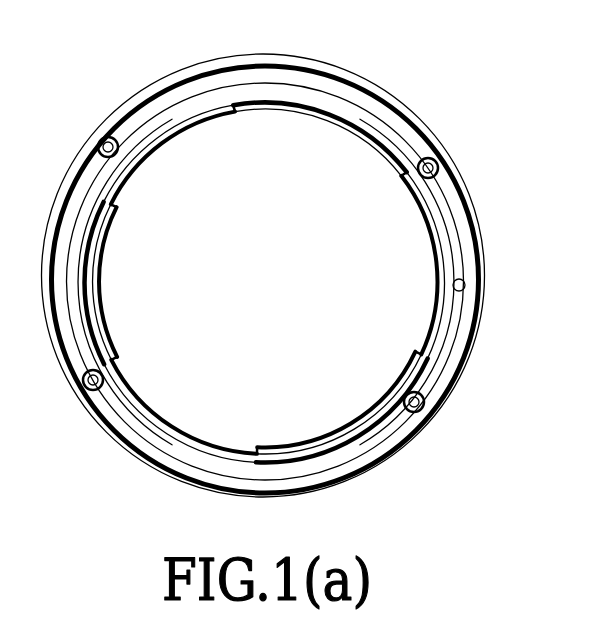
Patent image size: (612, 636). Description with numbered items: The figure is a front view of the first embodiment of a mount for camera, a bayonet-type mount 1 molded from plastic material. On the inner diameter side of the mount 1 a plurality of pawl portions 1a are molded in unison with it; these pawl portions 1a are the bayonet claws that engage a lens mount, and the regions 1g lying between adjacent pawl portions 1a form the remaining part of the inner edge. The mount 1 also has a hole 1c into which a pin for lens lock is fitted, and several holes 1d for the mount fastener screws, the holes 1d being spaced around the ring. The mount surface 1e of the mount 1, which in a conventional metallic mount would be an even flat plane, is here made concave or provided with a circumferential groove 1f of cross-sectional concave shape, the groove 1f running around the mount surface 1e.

The mount 1 is at (338, 62).
The pawl portions 1a is at (284, 108).
The hole 1c is at (465, 283).
The holes 1d is at (107, 136).
The mount surface 1e is at (380, 132).
The circumferential groove 1f is at (207, 90).
The gap between claws 1g is at (223, 112).